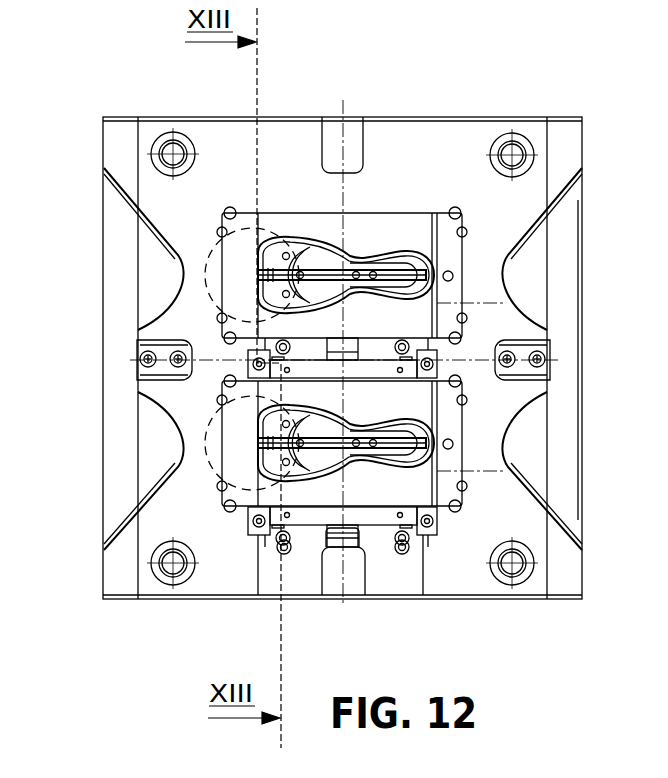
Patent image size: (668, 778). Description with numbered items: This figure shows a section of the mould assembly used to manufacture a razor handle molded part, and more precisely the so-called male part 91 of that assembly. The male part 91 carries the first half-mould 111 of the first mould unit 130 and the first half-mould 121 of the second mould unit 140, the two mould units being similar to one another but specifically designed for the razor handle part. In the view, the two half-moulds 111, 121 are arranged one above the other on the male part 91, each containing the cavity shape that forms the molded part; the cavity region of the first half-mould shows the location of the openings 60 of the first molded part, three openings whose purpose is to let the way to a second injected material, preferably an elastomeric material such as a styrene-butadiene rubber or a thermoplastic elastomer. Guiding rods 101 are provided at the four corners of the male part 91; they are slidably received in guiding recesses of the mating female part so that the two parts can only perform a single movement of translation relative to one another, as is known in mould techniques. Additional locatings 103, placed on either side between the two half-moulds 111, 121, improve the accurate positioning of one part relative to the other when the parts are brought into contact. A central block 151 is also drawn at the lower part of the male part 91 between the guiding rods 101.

The male part 91 is at (98, 568).
The guiding rods 101 is at (170, 140).
The locatings 103 is at (163, 364).
The first half-mould of the first mould unit 111 is at (371, 490).
The first half-mould of the second mould unit 121 is at (367, 227).
The first mould unit 130 is at (222, 466).
The second mould unit 140 is at (236, 286).
The openings 60 is at (260, 274).
The center block 151 is at (237, 578).